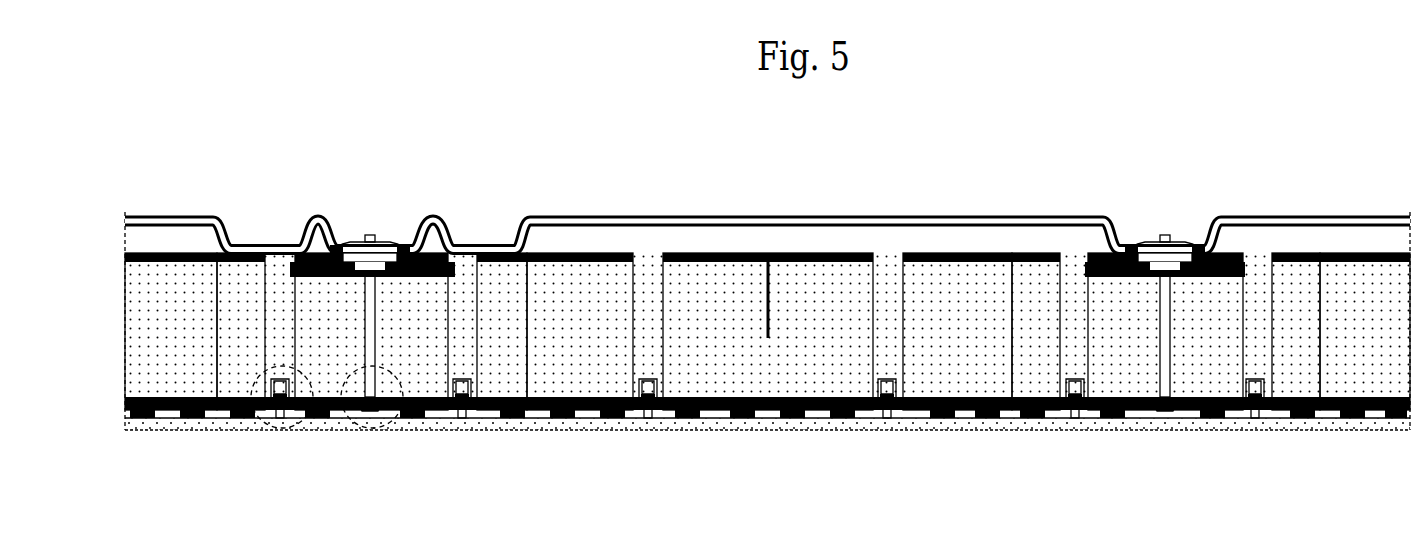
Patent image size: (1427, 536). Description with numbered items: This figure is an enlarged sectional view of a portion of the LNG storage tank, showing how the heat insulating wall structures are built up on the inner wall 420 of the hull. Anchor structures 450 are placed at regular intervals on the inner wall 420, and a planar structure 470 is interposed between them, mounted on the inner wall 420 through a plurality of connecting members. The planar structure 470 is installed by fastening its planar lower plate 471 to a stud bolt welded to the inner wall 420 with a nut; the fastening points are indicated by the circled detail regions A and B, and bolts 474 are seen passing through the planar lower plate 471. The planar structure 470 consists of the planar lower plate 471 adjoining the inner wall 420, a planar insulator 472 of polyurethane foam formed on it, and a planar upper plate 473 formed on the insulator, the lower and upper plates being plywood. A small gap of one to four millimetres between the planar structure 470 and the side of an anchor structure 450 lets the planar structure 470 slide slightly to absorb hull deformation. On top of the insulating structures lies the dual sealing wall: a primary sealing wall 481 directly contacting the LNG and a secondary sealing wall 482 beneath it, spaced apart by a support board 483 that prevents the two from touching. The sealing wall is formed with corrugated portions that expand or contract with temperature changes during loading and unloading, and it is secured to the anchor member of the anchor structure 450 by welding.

The inner wall 420 is at (963, 430).
The anchor structure 450 is at (358, 203).
The planar structure 470 is at (685, 203).
The planar lower plate 471 is at (812, 408).
The planar insulator 472 is at (836, 280).
The planar upper plate 473 is at (718, 253).
The anchor bolt 474 is at (658, 410).
The primary sealing wall 481 is at (443, 228).
The secondary sealing wall 482 is at (450, 244).
The support board 483 is at (502, 249).
The detail region A is at (372, 409).
The detail region B is at (274, 440).